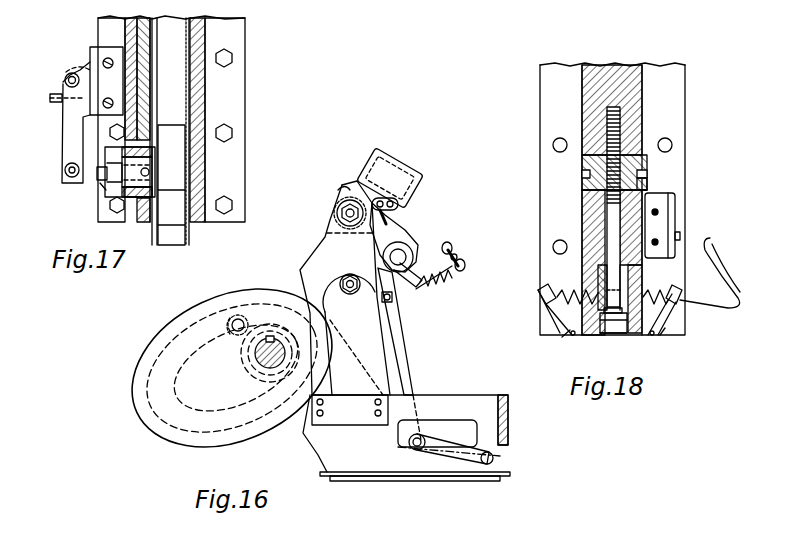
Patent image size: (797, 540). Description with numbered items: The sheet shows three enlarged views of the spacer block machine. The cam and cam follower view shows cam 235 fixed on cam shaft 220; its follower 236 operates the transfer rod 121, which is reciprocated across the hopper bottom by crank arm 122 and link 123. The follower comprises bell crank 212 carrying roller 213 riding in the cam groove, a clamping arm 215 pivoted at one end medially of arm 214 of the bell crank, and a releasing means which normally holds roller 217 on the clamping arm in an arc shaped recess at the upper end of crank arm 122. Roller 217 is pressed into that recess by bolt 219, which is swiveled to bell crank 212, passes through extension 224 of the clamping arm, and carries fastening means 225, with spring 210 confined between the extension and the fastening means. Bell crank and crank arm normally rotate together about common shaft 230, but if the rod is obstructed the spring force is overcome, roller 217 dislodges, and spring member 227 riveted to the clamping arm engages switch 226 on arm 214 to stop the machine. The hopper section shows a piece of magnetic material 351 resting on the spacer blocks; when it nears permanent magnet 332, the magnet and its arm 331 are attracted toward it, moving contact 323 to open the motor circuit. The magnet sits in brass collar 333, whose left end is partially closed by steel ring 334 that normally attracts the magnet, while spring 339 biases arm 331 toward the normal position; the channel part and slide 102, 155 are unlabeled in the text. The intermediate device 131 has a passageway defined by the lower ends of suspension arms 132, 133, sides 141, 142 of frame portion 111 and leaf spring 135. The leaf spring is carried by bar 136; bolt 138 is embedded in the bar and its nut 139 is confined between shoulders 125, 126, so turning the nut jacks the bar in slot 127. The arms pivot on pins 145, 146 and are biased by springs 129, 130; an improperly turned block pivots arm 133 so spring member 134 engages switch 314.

In FIG. 17, the channel frame 102 is at (190, 20).
In FIG. 17, the slide block 155 is at (172, 242).
In FIG. 18, the slide block 155 is at (628, 340).
In FIG. 17, the piece of magnetic material 351 is at (185, 158).
In FIG. 17, the contact 323 is at (84, 66).
In FIG. 17, the steel ring 334 is at (108, 165).
In FIG. 17, the spring 339 is at (114, 176).
In FIG. 17, the arm 331 is at (100, 176).
In FIG. 17, the brass collar 333 is at (112, 190).
In FIG. 17, the permanent magnet 332 is at (134, 220).
In FIG. 16, the rod 121 is at (318, 470).
In FIG. 16, the crank arm 122 is at (412, 380).
In FIG. 16, the link 123 is at (420, 462).
In FIG. 16, the cam 235 is at (164, 336).
In FIG. 16, the cam shaft 220 is at (256, 362).
In FIG. 16, the roller 213 is at (236, 333).
In FIG. 16, the bell crank 212 is at (325, 288).
In FIG. 16, the arm of bell crank 214 is at (340, 228).
In FIG. 16, the common shaft 230 is at (350, 298).
In FIG. 16, the cam follower 236 is at (352, 186).
In FIG. 16, the switch 226 is at (403, 163).
In FIG. 16, the spring member 227 is at (400, 207).
In FIG. 16, the clamping arm 215 is at (410, 227).
In FIG. 16, the roller 217 is at (413, 242).
In FIG. 16, the extension 224 is at (410, 290).
In FIG. 16, the spring 210 is at (445, 276).
In FIG. 16, the fastening means 225 is at (456, 250).
In FIG. 16, the bolt 219 is at (406, 296).
In FIG. 18, the frame portion 111 is at (640, 103).
In FIG. 18, the bolt 138 is at (610, 221).
In FIG. 18, the shoulder 125 is at (582, 158).
In FIG. 18, the shoulder 126 is at (582, 186).
In FIG. 18, the nut 139 is at (645, 186).
In FIG. 18, the switch 314 is at (680, 218).
In FIG. 18, the slot 127 is at (640, 280).
In FIG. 18, the bar 136 is at (598, 292).
In FIG. 18, the leaf spring 135 is at (612, 336).
In FIG. 18, the spring 130 is at (548, 296).
In FIG. 18, the spring 129 is at (682, 302).
In FIG. 18, the suspension arm 132 is at (548, 316).
In FIG. 18, the suspension arm 133 is at (683, 328).
In FIG. 18, the spring member 134 is at (708, 272).
In FIG. 18, the pin 145 is at (563, 340).
In FIG. 18, the side of frame portion 141 is at (574, 338).
In FIG. 18, the side of frame portion 142 is at (652, 338).
In FIG. 18, the pin 146 is at (664, 338).
In FIG. 18, the intermediate device 131 is at (552, 384).